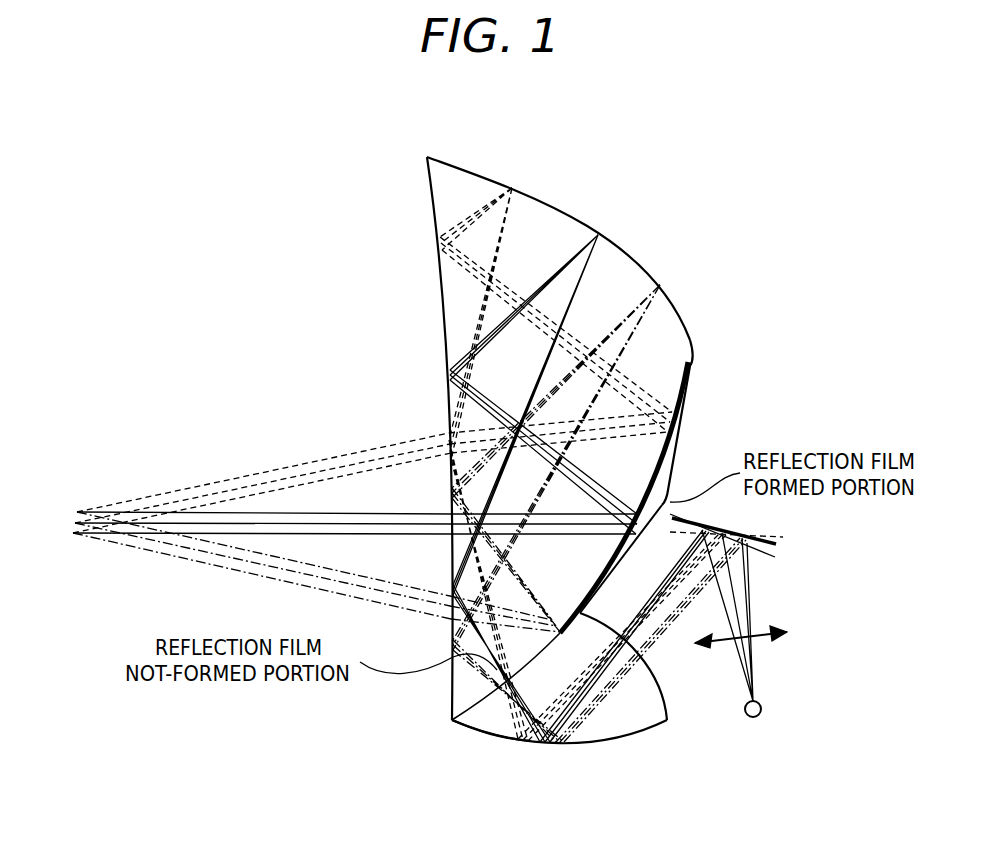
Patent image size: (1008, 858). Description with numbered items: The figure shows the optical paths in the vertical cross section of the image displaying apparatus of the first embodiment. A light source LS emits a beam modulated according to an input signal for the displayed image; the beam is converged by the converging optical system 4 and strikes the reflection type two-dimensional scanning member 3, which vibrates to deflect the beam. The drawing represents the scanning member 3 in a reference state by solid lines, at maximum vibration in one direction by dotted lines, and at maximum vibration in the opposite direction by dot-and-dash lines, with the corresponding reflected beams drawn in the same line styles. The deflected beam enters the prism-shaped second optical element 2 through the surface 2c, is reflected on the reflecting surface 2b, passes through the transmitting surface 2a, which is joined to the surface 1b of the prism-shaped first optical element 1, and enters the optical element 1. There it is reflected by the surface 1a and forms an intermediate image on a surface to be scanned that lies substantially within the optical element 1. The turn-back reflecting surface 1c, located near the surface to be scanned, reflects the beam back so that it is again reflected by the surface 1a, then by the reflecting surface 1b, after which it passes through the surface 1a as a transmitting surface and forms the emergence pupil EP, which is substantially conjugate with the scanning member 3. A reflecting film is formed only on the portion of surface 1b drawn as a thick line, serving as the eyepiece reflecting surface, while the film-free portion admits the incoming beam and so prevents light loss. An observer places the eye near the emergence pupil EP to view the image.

The first optical element 1 is at (447, 187).
The surface 1a of first optical element 1a is at (447, 343).
The reflecting surface 1b is at (690, 345).
The turn-back reflecting surface 1c is at (560, 208).
The second optical element 2 is at (618, 727).
The transmitting surface 2a is at (480, 723).
The reflecting surface 2b is at (557, 742).
The surface 2c is at (667, 692).
The scanning member 3 is at (777, 540).
The converging optical system 4 is at (780, 625).
The light source LS is at (762, 708).
The emergence pupil EP is at (75, 512).